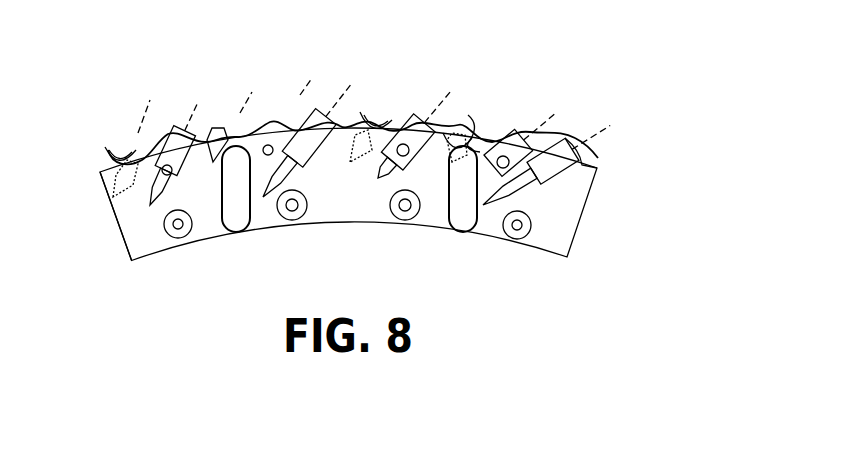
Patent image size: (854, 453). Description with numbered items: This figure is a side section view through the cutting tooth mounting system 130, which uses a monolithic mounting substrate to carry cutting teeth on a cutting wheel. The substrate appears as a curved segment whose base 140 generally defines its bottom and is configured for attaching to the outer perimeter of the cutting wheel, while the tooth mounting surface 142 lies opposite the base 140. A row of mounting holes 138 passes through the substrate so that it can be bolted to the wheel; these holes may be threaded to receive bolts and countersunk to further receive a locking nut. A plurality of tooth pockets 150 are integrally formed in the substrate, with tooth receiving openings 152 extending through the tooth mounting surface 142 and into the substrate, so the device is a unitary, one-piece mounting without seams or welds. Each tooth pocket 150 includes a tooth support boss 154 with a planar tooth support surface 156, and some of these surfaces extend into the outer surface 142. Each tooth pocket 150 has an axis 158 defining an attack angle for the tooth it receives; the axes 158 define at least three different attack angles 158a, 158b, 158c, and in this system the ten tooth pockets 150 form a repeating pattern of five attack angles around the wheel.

The cutting tooth mounting system 130 is at (620, 125).
The mounting holes 138 is at (410, 216).
The base 140 is at (163, 250).
The tooth mounting surface 142 is at (100, 163).
The tooth pockets 150 is at (167, 138).
The tooth receiving openings 152 is at (388, 117).
The tooth support boss 154 is at (528, 128).
The planar tooth support surface 156 is at (470, 117).
The tooth pocket axis 158 is at (180, 55).
The first attack angle 158a is at (187, 113).
The second attack angle 158b is at (247, 100).
The third attack angle 158c is at (318, 90).